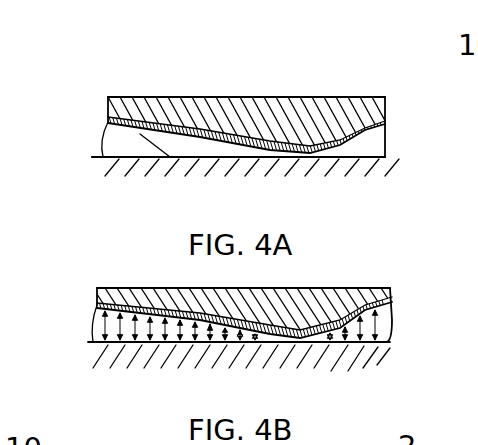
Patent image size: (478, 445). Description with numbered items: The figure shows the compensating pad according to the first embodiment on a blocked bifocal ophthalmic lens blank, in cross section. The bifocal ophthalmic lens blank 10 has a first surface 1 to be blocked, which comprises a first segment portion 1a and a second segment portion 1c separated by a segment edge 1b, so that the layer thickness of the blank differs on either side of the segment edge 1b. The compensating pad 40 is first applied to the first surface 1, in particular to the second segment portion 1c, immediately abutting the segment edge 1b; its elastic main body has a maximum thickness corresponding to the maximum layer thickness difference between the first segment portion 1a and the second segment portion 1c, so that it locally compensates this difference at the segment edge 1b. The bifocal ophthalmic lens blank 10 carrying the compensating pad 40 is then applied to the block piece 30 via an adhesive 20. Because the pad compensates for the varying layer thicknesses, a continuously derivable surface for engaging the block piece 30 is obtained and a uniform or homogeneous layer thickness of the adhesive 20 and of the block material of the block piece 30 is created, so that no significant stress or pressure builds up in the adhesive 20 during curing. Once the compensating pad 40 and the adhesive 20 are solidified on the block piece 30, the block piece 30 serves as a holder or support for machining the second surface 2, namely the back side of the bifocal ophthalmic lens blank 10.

In FIG. 4A, the first surface 1 is at (147, 135).
In FIG. 4A, the first segment portion 1a is at (308, 147).
In FIG. 4A, the segment edge 1b is at (260, 148).
In FIG. 4A, the second segment portion 1c is at (142, 158).
In FIG. 4A, the second surface 2 is at (352, 97).
In FIG. 4B, the second surface 2 is at (352, 290).
In FIG. 4A, the bifocal ophthalmic lens blank 10 is at (110, 98).
In FIG. 4B, the bifocal ophthalmic lens blank 10 is at (97, 288).
In FIG. 4A, the adhesive 20 is at (380, 143).
In FIG. 4B, the adhesive 20 is at (390, 318).
In FIG. 4A, the block piece 30 is at (355, 173).
In FIG. 4B, the block piece 30 is at (363, 361).
In FIG. 4A, the compensating pad 40 is at (220, 165).
In FIG. 4B, the compensating pad 40 is at (233, 345).